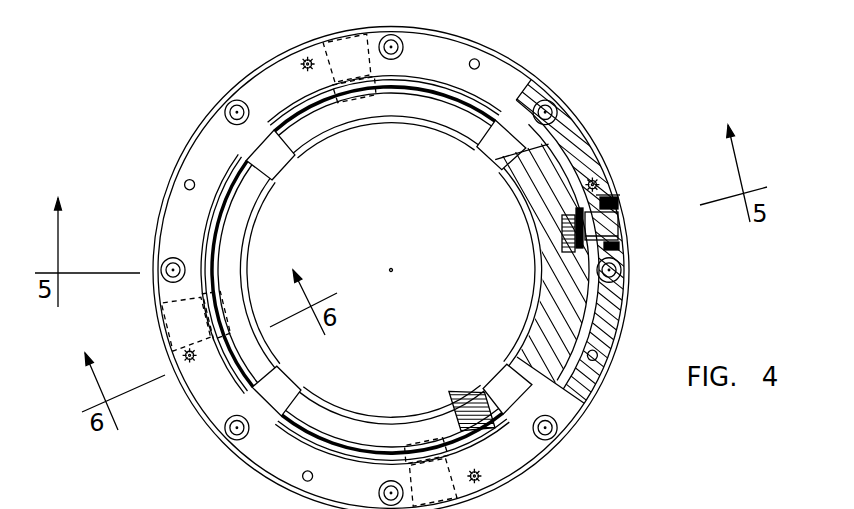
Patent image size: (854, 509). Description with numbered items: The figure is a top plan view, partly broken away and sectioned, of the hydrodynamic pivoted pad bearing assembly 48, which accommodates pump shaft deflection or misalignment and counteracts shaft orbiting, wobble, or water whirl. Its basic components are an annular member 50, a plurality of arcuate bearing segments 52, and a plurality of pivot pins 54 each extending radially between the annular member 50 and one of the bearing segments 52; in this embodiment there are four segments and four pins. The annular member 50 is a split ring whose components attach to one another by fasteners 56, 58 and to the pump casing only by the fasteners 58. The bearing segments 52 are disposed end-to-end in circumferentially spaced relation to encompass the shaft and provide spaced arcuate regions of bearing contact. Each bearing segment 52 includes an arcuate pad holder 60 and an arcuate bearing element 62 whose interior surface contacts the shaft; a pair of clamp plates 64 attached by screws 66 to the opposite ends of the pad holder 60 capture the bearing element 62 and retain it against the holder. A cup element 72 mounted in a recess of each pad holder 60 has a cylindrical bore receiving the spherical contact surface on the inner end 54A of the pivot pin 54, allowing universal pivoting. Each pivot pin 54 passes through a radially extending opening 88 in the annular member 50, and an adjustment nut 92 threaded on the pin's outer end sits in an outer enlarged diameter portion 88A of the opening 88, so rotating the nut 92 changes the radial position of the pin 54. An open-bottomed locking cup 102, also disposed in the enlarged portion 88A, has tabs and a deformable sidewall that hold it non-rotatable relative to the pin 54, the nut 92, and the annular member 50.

The pivoted pad bearing assembly 48 is at (594, 77).
The annular member 50 is at (638, 228).
The arcuate bearing segments 52 is at (526, 334).
The pivot pins 54 is at (610, 226).
The pivot pin inner end 54A is at (575, 218).
The fasteners 56 is at (186, 366).
The fasteners 58 is at (232, 437).
The arcuate pad holder 60 is at (557, 340).
The arcuate bearing element 62 is at (536, 286).
The clamp plates 64 is at (268, 168).
The screws 66 is at (497, 420).
The cup elements 72 is at (546, 246).
The openings 88 is at (577, 200).
The outer enlarged diameter portion 88A is at (622, 208).
The adjustment nut 92 is at (627, 241).
The locking cup 102 is at (607, 196).